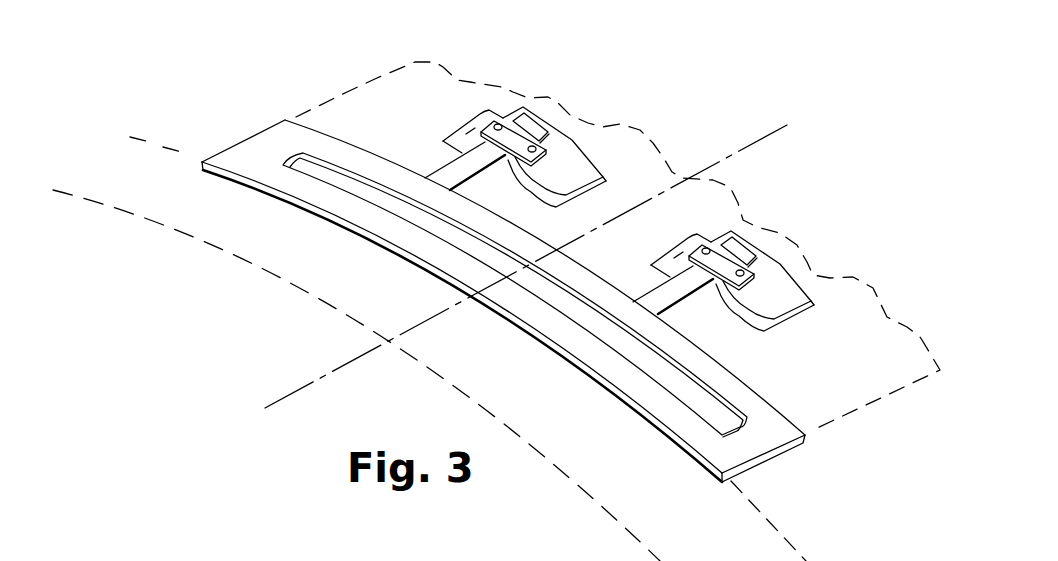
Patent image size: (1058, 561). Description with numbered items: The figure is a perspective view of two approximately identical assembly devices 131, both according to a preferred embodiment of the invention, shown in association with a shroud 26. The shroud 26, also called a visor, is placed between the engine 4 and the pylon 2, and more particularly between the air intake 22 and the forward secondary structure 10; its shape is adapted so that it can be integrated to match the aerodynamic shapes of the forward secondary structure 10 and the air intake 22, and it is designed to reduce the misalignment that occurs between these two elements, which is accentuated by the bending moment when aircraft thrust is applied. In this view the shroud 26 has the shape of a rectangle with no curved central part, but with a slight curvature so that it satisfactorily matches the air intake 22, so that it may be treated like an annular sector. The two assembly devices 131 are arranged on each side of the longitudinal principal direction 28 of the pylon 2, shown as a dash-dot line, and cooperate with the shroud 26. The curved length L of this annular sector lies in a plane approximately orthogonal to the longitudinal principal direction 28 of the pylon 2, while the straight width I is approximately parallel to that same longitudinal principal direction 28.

The pylon 2 is at (480, 100).
The engine 4 is at (138, 183).
The forward secondary structure 10 is at (840, 375).
The air intake 22 is at (205, 222).
The shroud 26 is at (337, 155).
The longitudinal principal direction 28 is at (745, 148).
The assembly device 131 is at (588, 152).
The straight width I is at (225, 148).
The curved length L is at (437, 273).